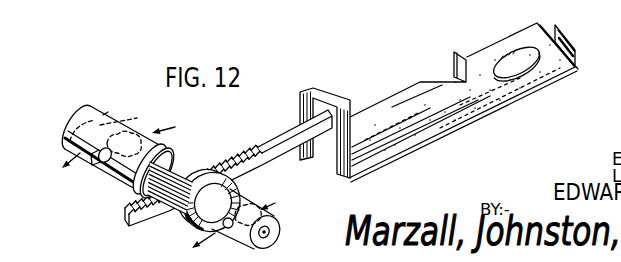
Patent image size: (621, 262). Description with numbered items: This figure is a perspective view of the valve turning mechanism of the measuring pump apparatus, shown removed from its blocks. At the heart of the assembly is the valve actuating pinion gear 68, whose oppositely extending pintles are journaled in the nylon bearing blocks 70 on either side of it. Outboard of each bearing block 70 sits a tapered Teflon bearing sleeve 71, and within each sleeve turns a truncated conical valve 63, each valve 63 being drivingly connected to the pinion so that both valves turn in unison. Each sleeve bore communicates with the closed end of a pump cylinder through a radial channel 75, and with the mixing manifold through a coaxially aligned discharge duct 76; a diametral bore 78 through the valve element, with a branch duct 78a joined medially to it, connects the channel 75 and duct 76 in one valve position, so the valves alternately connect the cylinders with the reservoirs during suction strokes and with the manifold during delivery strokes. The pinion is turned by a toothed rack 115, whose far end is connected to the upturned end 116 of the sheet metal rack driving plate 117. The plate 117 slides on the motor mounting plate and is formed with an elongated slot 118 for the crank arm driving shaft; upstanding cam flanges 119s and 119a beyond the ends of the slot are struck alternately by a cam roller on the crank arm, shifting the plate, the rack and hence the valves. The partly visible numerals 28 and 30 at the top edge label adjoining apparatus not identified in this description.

The valve 63 is at (62, 147).
The valve actuating pinion gear 68 is at (183, 172).
The bearing block 70 is at (139, 185).
The bearing sleeve 71 is at (105, 113).
The channel 75 is at (145, 133).
The discharge duct 76 is at (98, 163).
The diametral bore 78 is at (227, 229).
The branch duct 78a is at (241, 207).
The rack 115 is at (255, 146).
The upturned end 116 is at (334, 98).
The rack driving plate 117 is at (403, 101).
The elongated slot 118 is at (513, 61).
The cam flange 119s is at (455, 52).
The cam flange 119a is at (558, 25).
The member 28 is at (382, 8).
The member 30 is at (207, 0).